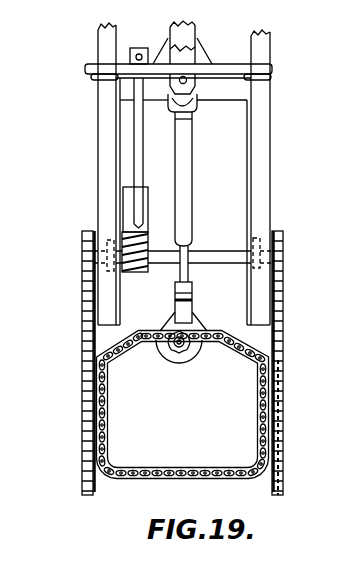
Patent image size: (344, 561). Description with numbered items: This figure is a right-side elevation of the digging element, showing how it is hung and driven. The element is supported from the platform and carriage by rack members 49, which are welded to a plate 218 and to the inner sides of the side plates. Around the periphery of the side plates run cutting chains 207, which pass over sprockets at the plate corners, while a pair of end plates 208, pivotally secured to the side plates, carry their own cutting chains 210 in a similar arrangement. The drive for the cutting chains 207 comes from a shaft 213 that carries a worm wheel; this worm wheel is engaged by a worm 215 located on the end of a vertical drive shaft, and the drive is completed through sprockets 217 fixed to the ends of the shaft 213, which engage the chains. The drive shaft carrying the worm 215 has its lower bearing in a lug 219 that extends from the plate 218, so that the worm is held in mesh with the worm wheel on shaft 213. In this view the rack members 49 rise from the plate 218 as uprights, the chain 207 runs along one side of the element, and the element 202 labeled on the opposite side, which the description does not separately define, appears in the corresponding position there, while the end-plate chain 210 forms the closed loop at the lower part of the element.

The rack member 49 is at (97, 142).
The right chain guide 202 is at (274, 389).
The cutting chain 207 is at (63, 363).
The end plate 208 is at (149, 461).
The cutting chain 210 is at (188, 478).
The shaft 213 is at (234, 256).
The worm 215 is at (146, 269).
The sprocket 217 is at (82, 256).
The plate 218 is at (91, 65).
The lug 219 is at (151, 200).